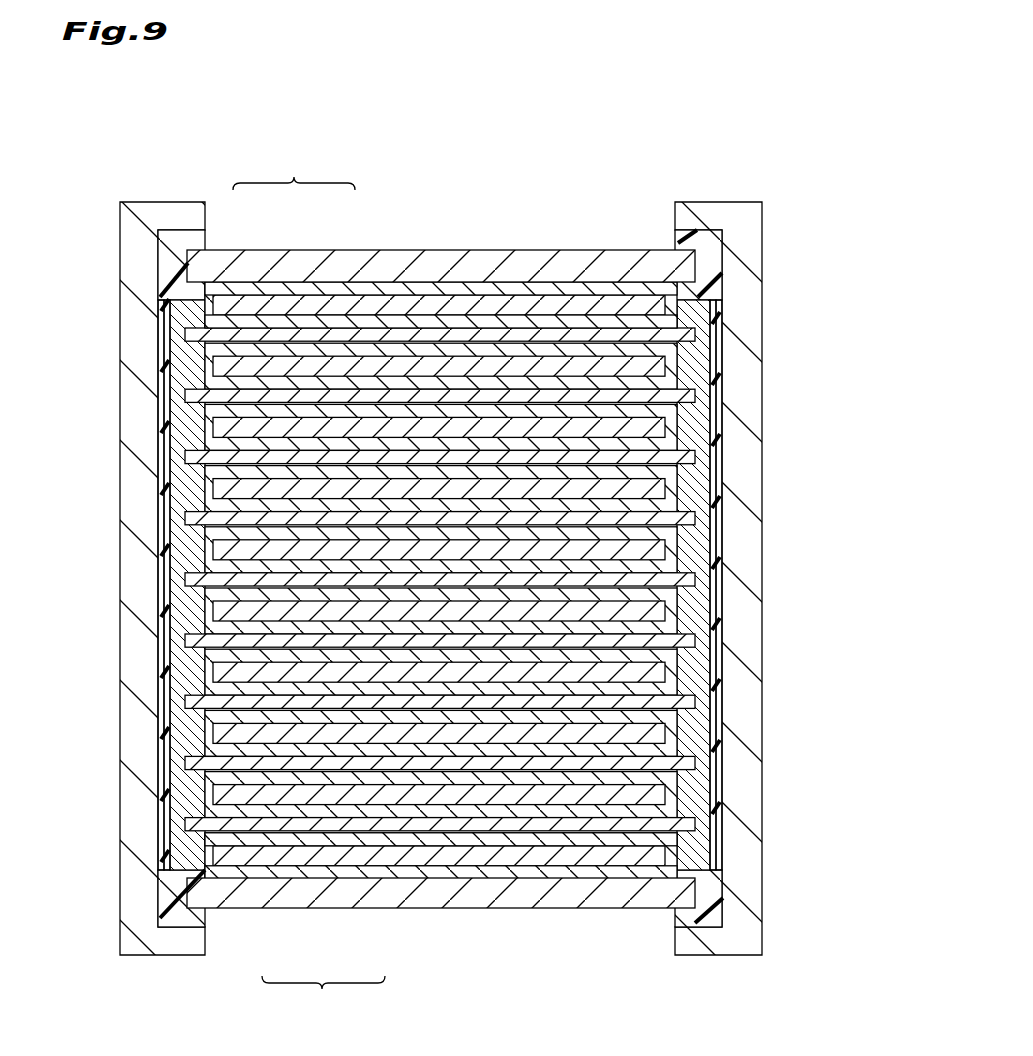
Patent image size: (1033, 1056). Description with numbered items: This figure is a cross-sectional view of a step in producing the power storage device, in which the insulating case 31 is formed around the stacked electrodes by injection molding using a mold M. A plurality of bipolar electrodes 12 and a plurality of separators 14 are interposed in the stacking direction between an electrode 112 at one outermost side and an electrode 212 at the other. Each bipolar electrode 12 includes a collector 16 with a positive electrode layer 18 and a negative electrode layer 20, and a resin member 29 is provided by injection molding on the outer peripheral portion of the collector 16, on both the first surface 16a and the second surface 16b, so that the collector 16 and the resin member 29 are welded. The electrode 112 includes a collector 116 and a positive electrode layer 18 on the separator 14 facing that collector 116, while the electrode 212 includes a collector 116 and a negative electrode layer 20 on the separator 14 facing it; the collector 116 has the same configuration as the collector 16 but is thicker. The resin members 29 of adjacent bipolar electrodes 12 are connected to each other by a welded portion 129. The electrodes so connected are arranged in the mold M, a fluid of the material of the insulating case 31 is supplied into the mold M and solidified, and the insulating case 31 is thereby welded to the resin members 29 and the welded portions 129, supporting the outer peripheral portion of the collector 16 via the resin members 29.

The mold M is at (128, 238).
The insulating case 31 is at (186, 256).
The welded portion 129 is at (172, 924).
The electrode 112 is at (294, 167).
The electrode 212 is at (323, 997).
The collector 116 is at (262, 246).
The positive electrode layer 18 is at (332, 290).
The collector 16 is at (282, 344).
The first surface 16a is at (265, 398).
The second surface 16b is at (255, 292).
The negative electrode layer 20 is at (262, 333).
The separator 14 is at (672, 300).
The bipolar electrode 12 is at (700, 332).
The resin member 29 is at (163, 306).